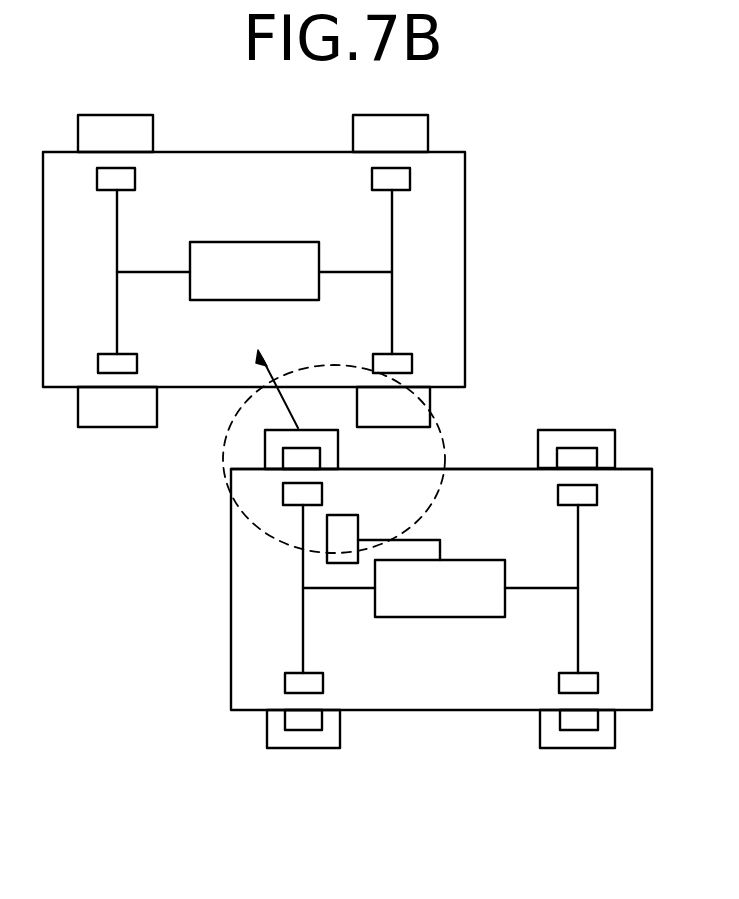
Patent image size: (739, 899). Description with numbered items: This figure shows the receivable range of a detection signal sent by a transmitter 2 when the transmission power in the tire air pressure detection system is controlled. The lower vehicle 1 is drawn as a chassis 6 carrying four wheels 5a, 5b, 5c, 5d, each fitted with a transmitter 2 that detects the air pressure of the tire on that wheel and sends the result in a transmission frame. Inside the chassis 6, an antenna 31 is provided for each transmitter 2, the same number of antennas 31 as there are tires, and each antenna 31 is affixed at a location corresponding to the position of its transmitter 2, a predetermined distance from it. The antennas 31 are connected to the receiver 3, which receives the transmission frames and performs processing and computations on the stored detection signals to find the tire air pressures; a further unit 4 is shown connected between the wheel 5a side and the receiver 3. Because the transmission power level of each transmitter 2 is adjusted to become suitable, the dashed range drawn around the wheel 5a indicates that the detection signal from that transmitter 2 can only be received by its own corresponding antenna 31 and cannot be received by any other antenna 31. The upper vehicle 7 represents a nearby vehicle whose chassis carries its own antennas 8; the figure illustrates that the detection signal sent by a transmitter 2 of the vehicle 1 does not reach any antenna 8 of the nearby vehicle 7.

The vehicle 1 is at (485, 468).
The transmitter 2 is at (284, 457).
The receiver 3 is at (475, 560).
The receiver 4 is at (358, 520).
The wheel 5a is at (328, 418).
The wheel 5b is at (340, 748).
The wheel 5c is at (598, 430).
The wheel 5d is at (608, 748).
The chassis 6 is at (508, 468).
The nearby vehicle 7 is at (301, 151).
The antenna of nearby vehicle 8 is at (135, 179).
The antenna 31 is at (322, 494).